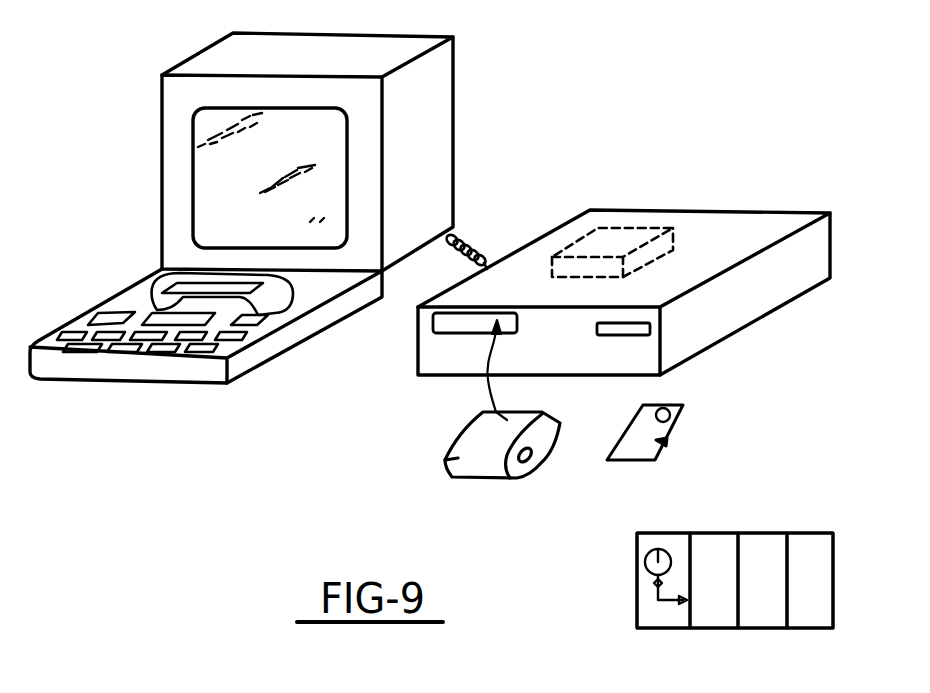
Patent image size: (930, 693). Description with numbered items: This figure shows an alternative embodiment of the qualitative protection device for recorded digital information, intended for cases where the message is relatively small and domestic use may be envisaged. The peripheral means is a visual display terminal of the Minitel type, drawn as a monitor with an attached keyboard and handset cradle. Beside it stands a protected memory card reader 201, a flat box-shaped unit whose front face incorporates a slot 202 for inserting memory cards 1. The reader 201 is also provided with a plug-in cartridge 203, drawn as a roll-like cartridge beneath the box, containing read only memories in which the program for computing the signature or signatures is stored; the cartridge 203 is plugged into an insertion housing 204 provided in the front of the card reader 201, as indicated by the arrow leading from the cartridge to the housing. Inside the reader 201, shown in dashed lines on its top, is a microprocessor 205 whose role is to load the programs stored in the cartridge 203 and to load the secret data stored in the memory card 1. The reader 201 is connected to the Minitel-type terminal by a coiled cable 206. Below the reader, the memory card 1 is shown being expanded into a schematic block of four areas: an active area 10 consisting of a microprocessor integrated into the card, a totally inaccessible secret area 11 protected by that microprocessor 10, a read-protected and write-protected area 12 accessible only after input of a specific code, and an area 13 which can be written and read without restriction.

The memory card 1 is at (665, 443).
The active area 10 is at (656, 549).
The secret area 11 is at (707, 553).
The read-protected and write-protected area 12 is at (758, 553).
The free area 13 is at (813, 550).
The protected memory card reader 201 is at (708, 228).
The slot 202 is at (653, 330).
The plug-in cartridge 203 is at (447, 470).
The insertion housing 204 is at (450, 323).
The microprocessor 205 is at (610, 228).
The cable 206 is at (482, 235).